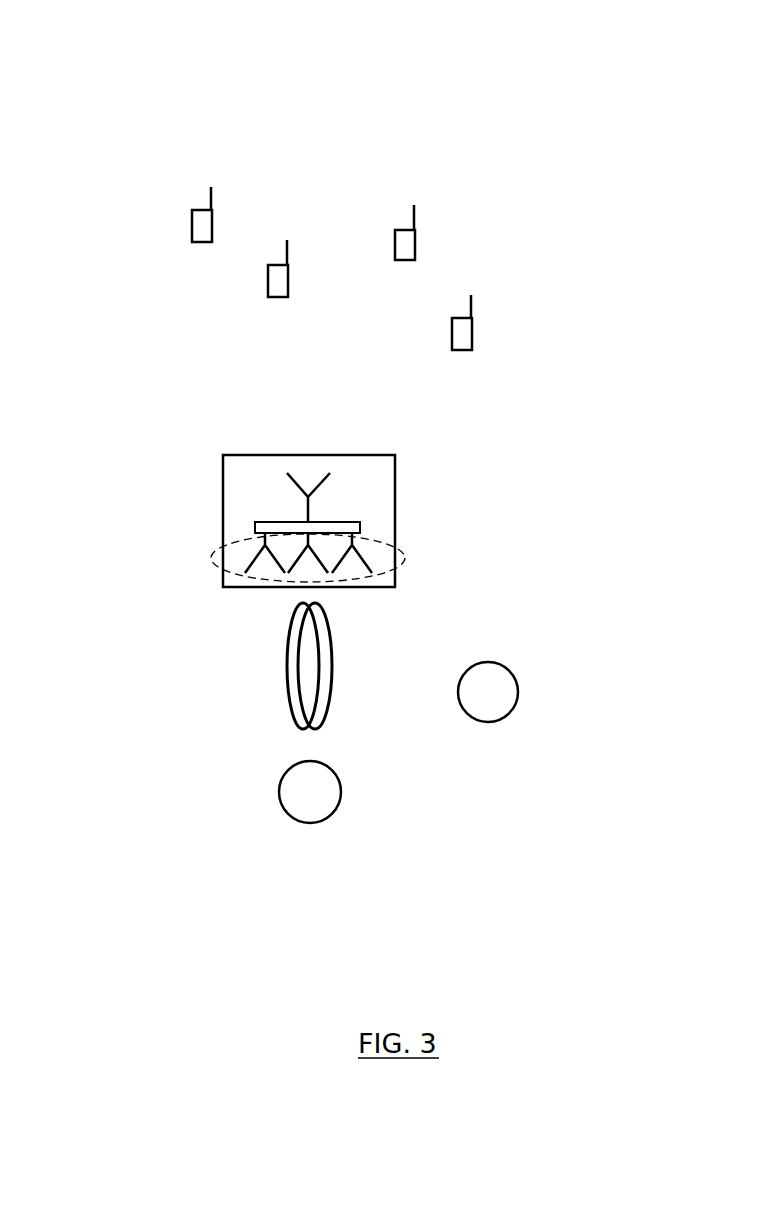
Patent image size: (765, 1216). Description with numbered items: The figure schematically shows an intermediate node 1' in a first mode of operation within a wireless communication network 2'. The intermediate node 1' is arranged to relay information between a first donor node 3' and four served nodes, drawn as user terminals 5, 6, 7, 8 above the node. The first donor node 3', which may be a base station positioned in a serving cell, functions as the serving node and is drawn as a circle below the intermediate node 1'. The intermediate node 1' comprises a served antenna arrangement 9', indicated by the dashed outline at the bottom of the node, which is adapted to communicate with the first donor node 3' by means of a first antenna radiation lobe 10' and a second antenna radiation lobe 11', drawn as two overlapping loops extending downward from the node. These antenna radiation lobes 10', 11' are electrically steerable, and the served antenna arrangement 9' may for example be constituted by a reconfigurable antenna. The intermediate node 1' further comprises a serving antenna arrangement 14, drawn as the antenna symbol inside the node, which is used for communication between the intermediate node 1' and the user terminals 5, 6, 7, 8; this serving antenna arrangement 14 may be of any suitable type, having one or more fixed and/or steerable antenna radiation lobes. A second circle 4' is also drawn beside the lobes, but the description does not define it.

The wireless communication network 2' is at (143, 43).
The user terminal 5 is at (205, 229).
The user terminal 6 is at (278, 285).
The user terminal 7 is at (402, 245).
The user terminal 8 is at (462, 340).
The serving antenna arrangement 14 is at (303, 473).
The intermediate node 1' is at (452, 481).
The served antenna arrangement 9' is at (440, 547).
The first antenna radiation lobe 10' is at (205, 673).
The second antenna radiation lobe 11' is at (415, 709).
The first donor node 3' is at (219, 794).
The object 4' is at (551, 741).